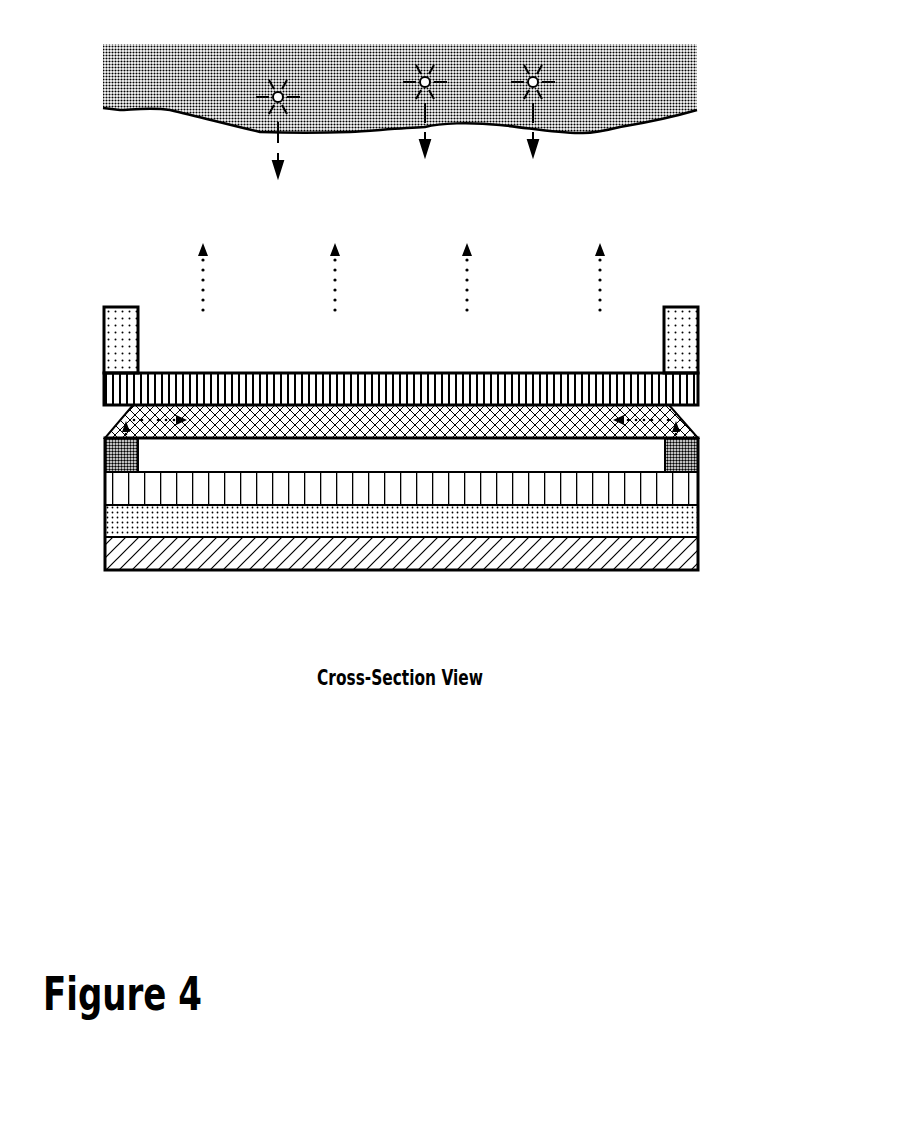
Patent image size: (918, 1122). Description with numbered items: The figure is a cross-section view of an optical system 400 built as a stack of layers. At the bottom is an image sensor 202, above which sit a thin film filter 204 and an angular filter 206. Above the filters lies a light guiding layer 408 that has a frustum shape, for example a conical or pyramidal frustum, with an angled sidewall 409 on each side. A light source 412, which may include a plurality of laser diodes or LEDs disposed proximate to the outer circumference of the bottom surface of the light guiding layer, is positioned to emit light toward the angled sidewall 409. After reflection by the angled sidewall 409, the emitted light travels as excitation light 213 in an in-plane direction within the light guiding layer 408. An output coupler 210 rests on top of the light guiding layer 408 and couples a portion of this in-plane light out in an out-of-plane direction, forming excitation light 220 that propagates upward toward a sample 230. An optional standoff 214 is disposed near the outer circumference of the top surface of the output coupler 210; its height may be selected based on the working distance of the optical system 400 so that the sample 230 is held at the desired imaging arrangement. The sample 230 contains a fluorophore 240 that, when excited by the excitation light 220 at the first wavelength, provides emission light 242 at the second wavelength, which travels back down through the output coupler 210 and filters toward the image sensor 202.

The optical system 400 is at (727, 223).
The sample 230 is at (573, 133).
The fluorophore 240 is at (428, 76).
The emission light 242 is at (430, 131).
The excitation light 220 is at (466, 288).
The standoff 214 is at (118, 307).
The output coupler 210 is at (401, 389).
The light guiding layer 408 is at (401, 421).
The excitation light 213 is at (130, 416).
The angled sidewall 409 is at (688, 428).
The light source 412 is at (104, 457).
The angular filter 206 is at (401, 488).
The thin film filter 204 is at (401, 521).
The image sensor 202 is at (401, 553).